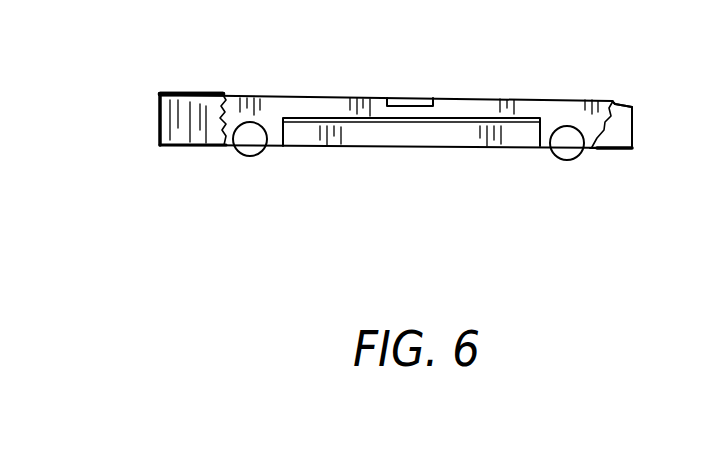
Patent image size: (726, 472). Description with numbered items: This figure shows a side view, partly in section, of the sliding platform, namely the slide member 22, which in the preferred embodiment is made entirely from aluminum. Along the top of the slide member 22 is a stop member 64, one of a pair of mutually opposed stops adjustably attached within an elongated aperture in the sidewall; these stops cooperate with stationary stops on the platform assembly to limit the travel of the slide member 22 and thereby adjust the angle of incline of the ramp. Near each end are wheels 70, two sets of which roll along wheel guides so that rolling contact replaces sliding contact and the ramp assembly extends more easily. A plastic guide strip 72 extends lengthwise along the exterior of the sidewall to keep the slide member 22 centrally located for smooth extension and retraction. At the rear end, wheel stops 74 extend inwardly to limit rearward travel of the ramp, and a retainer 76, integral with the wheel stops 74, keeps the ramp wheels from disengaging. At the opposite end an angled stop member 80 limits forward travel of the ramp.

The slide member 22 is at (400, 158).
The stop members 64 is at (418, 100).
The wheels 70 is at (238, 150).
The guide strip 72 is at (368, 141).
The wheel stops 74 is at (160, 126).
The retainer 76 is at (188, 95).
The angled stop member 80 is at (612, 100).